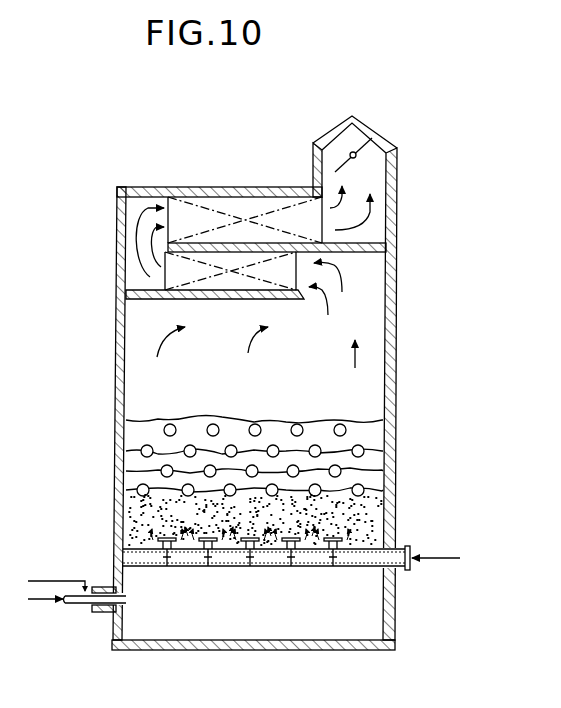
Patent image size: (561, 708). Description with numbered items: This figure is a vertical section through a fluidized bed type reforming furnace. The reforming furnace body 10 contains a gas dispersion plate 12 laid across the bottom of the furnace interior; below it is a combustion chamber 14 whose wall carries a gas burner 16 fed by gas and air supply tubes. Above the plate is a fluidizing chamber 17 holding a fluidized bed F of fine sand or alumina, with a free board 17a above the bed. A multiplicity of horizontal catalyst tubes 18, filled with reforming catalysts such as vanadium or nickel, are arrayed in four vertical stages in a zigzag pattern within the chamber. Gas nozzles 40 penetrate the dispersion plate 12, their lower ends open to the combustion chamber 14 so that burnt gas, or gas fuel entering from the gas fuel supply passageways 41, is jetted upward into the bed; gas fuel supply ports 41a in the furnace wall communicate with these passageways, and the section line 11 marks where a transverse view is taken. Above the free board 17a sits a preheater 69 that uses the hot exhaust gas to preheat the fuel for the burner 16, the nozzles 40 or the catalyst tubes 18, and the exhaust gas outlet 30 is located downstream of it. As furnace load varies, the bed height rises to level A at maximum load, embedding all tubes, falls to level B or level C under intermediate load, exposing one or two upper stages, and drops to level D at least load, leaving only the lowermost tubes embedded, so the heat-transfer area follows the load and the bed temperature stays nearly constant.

The reforming furnace body 10 is at (118, 322).
The section line 11— 11 is at (263, 408).
The gas dispersion plate 12 is at (218, 574).
The combustion chamber 14 is at (243, 628).
The gas burner 16 is at (88, 612).
The fluidizing chamber 17 is at (325, 387).
The free board 17a is at (153, 363).
The catalyst tubes 18 is at (141, 450).
The exhaust gas outlet 30 is at (370, 137).
The gas nozzles 40 is at (168, 555).
The gas fuel supply passageways 41 is at (291, 579).
The gas fuel supply ports 41a is at (395, 567).
The preheater 69 is at (225, 262).
The level A is at (152, 420).
The level B is at (203, 450).
The level C is at (179, 468).
The level D is at (164, 492).
The fluidized bed F is at (368, 510).